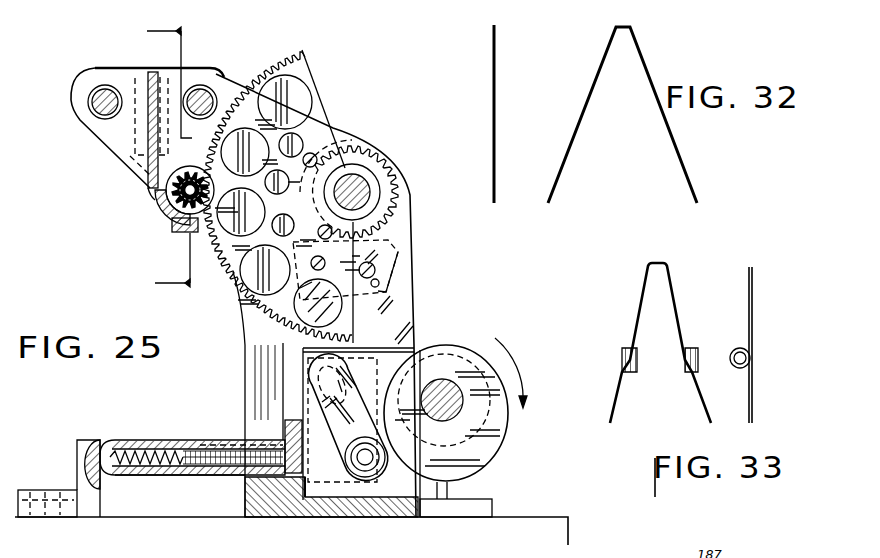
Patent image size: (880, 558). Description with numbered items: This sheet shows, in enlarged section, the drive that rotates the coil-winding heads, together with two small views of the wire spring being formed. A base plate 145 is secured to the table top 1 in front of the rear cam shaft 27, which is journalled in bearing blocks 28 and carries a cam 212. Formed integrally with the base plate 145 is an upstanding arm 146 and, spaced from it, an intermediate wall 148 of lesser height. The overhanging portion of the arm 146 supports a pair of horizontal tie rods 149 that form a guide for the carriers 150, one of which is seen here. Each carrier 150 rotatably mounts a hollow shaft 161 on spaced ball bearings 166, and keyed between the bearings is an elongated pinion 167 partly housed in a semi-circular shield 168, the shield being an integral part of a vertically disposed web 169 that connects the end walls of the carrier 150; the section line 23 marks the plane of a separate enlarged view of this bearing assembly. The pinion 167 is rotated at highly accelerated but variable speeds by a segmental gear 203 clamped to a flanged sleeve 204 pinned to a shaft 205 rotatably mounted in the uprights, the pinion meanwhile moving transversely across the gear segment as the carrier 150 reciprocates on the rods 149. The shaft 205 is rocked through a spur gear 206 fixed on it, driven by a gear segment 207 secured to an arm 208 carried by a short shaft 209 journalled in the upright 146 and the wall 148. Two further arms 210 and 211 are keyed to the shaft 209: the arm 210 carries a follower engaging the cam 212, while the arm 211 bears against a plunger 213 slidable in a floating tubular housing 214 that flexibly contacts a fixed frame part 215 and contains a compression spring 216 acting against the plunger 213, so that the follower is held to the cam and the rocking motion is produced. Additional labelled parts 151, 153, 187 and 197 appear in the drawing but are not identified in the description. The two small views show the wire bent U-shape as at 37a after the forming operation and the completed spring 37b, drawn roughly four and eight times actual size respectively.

In FIG. 25, the table top 1 is at (523, 519).
In FIG. 25, the section line 23- 23 is at (153, 160).
In FIG. 25, the shaft 27 is at (457, 412).
In FIG. 25, the bearing blocks 28 is at (492, 489).
In FIG. 32, the U-shaped bent wire 37a is at (594, 80).
In FIG. 33, the completed spring 37b is at (747, 270).
In FIG. 25, the base plate 145 is at (277, 516).
In FIG. 25, the upstanding arm 146 is at (410, 313).
In FIG. 25, the intermediate wall 148 is at (402, 349).
In FIG. 25, the tie rods 149 is at (98, 83).
In FIG. 25, the carriers 150 is at (107, 128).
In FIG. 25, the rollers 151 is at (88, 98).
In FIG. 25, the guide bar 153 is at (142, 73).
In FIG. 25, the hollow shaft 161 is at (163, 218).
In FIG. 25, the ball bearings 166 is at (149, 200).
In FIG. 25, the elongated pinion 167 is at (155, 207).
In FIG. 25, the semi-circular shield 168 is at (173, 230).
In FIG. 25, the web 169 is at (147, 128).
In FIG. 25, the sector gear 187 is at (210, 193).
In FIG. 25, the support block 197 is at (100, 524).
In FIG. 25, the segmental gears 203 is at (312, 64).
In FIG. 25, the sleeves 204 is at (360, 167).
In FIG. 25, the shaft 205 is at (375, 195).
In FIG. 25, the spur gear 206 is at (392, 177).
In FIG. 25, the gear segment 207 is at (398, 260).
In FIG. 25, the arm 208 is at (382, 312).
In FIG. 25, the short shaft 209 is at (312, 380).
In FIG. 25, the arm 210 is at (352, 485).
In FIG. 25, the arm 211 is at (296, 422).
In FIG. 25, the cam 212 is at (497, 459).
In FIG. 25, the plunger 213 is at (298, 500).
In FIG. 25, the floating tubular housing 214 is at (220, 477).
In FIG. 25, the fixed frame part 215 is at (90, 442).
In FIG. 25, the compression spring 216 is at (133, 444).